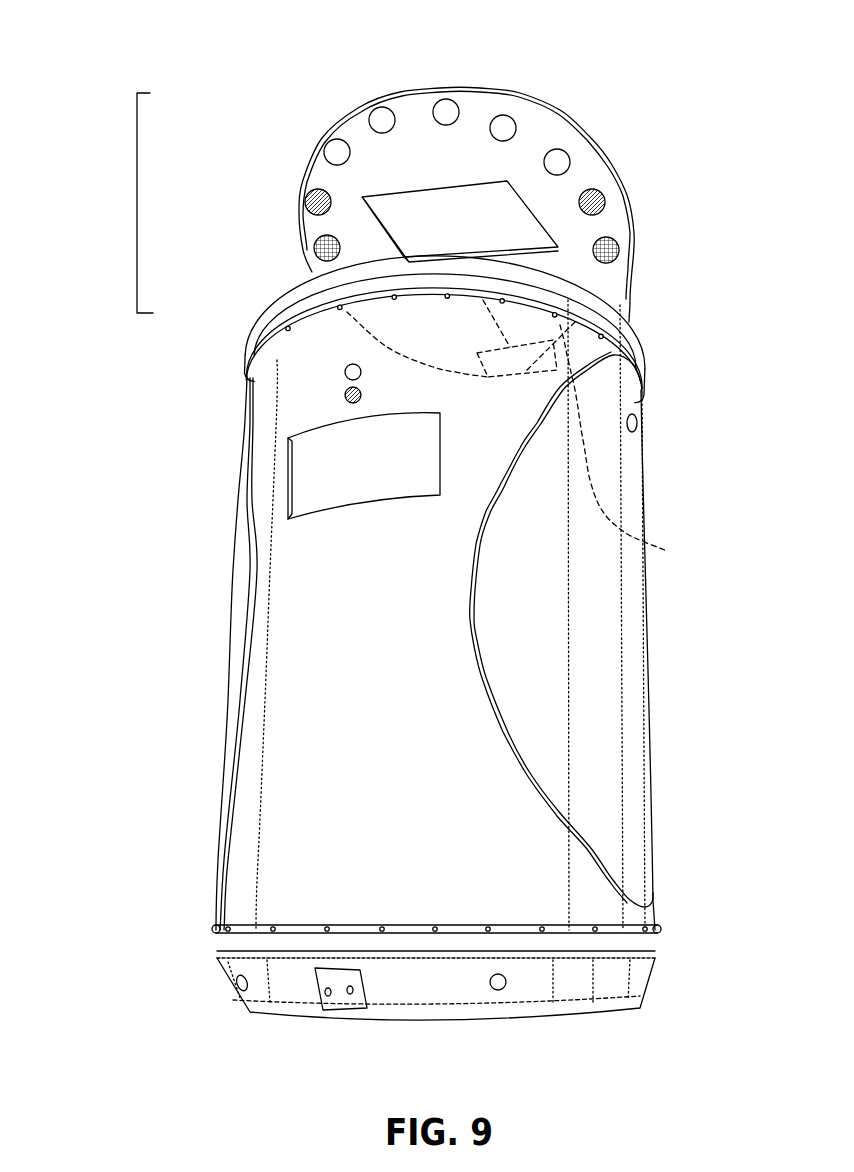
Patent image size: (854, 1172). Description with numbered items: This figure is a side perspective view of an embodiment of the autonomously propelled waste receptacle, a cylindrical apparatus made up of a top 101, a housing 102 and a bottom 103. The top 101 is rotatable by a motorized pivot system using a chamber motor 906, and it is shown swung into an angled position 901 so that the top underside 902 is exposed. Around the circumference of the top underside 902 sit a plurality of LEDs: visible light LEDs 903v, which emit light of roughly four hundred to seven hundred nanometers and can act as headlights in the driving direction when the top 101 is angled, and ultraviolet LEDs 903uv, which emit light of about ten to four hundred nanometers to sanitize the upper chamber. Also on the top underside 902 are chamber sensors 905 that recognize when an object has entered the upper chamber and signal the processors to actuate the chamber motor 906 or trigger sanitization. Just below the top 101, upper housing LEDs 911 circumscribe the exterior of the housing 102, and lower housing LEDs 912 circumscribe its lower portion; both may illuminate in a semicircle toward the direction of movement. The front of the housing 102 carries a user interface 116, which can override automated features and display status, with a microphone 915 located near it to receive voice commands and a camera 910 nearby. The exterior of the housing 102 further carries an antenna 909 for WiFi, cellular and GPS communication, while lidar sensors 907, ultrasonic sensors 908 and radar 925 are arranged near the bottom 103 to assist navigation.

The top 101 is at (470, 118).
The housing 102 is at (287, 886).
The bottom 103 is at (447, 1020).
The user interface 116 is at (333, 478).
The angled position 901 is at (137, 210).
The top underside 902 is at (423, 140).
The visible light LEDs 903v is at (447, 112).
The ultraviolet LEDs 903uv is at (592, 203).
The chamber sensors 905 is at (606, 250).
The chamber motor 906 is at (667, 551).
The lidar sensors 907 is at (243, 984).
The ultrasonic sensors 908 is at (326, 1004).
The antenna 909 is at (638, 423).
The camera 910 is at (345, 375).
The upper housing LEDs 911 is at (625, 345).
The lower housing LEDs 912 is at (660, 929).
The microphone 915 is at (347, 400).
The radar 925 is at (357, 1006).